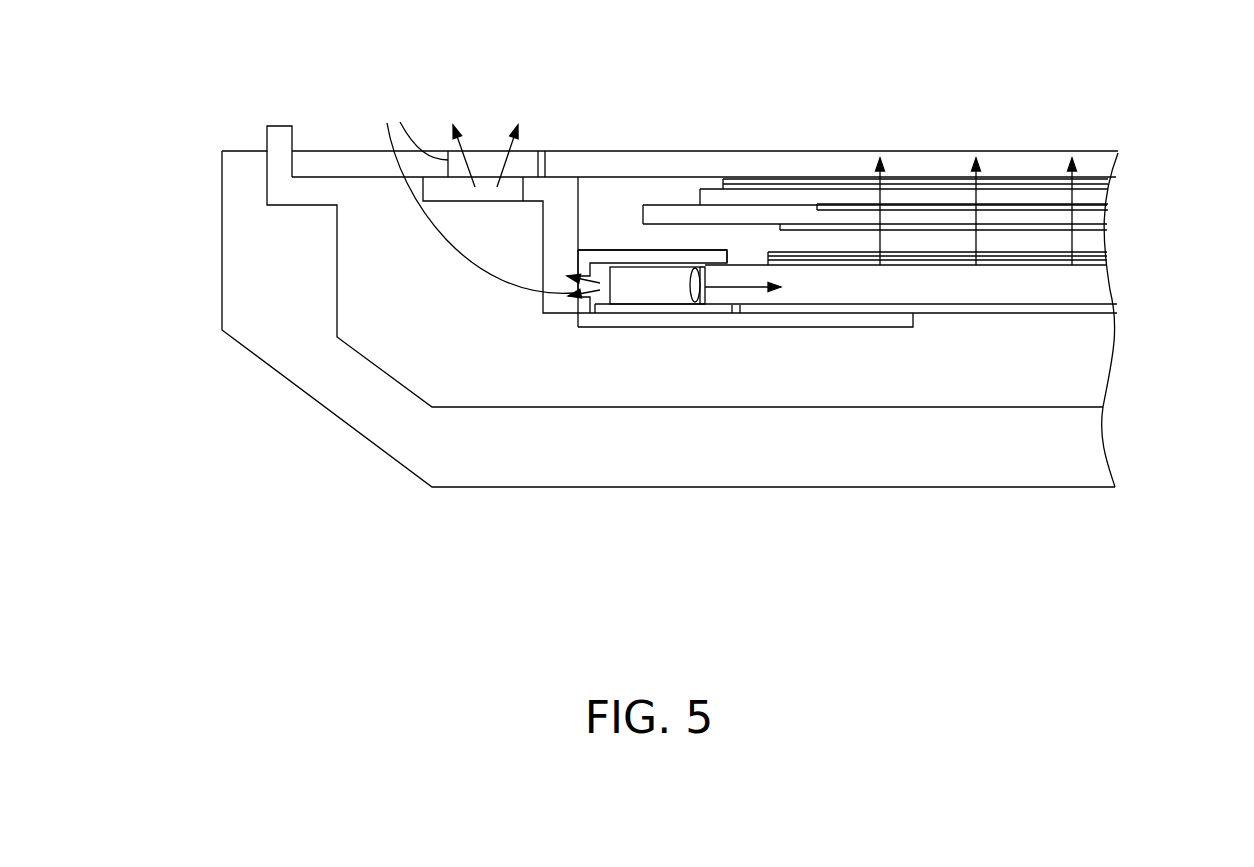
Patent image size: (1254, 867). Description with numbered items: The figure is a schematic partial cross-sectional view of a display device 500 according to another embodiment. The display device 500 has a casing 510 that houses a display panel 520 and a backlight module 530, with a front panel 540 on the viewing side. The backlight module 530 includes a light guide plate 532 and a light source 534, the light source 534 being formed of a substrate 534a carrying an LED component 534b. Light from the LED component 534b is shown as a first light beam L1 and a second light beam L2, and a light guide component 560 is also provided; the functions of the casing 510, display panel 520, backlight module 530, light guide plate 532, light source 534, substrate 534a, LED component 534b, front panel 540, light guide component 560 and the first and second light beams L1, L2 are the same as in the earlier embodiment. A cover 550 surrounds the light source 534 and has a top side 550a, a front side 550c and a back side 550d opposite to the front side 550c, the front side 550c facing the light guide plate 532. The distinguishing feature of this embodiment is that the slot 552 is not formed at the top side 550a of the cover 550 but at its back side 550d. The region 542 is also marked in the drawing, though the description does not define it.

The display device 500 is at (1187, 532).
The casing 510 is at (258, 282).
The display panel 520 is at (762, 214).
The backlight module 530 is at (843, 428).
The light guide plate 532 is at (877, 283).
The light source 534 is at (678, 407).
The substrate 534a is at (633, 308).
The LED component 534b is at (663, 293).
The front panel 540 is at (912, 158).
The light-transmitting region 542 is at (489, 158).
The cover 550 is at (627, 257).
The top side 550a is at (660, 250).
The front side 550c is at (737, 252).
The back side 550d is at (577, 262).
The slot 552 is at (583, 303).
The light guide component 560 is at (555, 188).
The first light beam L1 is at (752, 284).
The second light beam L2 is at (489, 193).